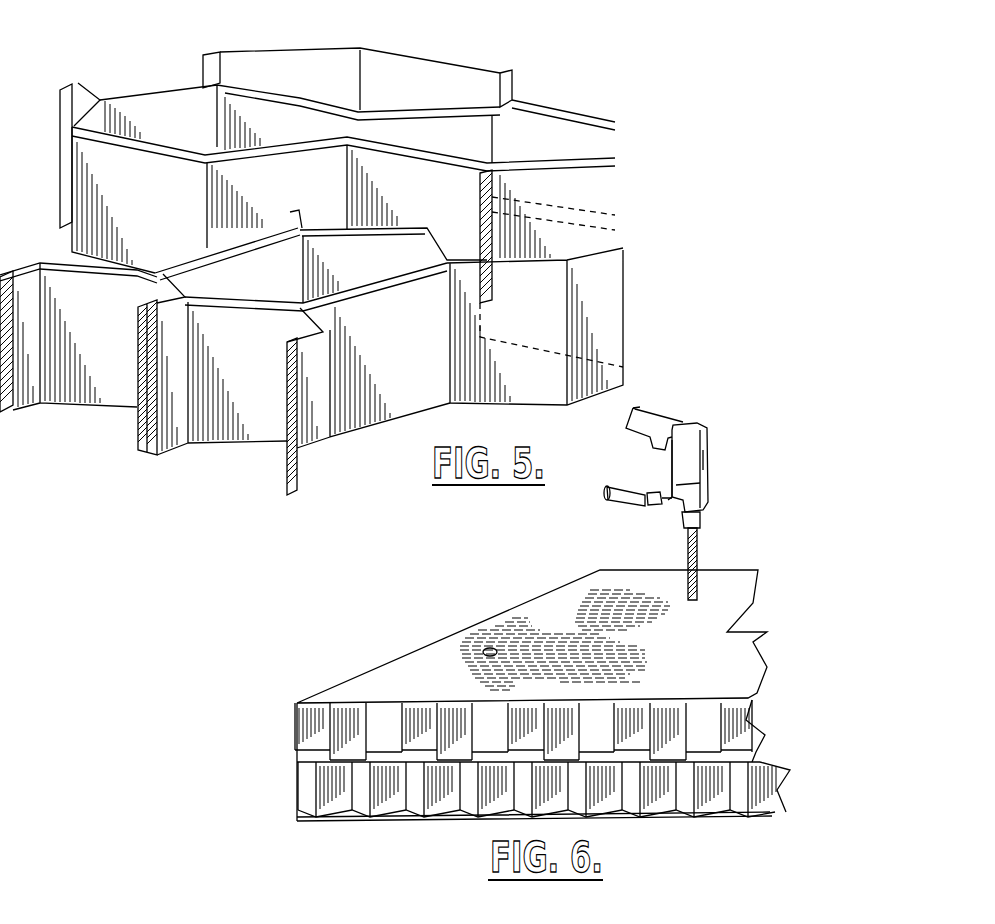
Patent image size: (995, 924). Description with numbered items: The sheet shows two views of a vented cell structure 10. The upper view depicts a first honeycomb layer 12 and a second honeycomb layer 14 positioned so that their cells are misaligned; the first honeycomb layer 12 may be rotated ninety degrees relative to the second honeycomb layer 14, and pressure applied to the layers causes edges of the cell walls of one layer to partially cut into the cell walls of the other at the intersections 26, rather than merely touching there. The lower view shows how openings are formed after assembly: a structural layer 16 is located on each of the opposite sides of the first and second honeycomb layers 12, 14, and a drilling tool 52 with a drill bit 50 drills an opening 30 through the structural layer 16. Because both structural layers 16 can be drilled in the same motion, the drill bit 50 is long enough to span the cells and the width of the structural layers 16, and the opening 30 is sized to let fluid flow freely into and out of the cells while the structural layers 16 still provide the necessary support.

In FIG. 6, the vented cell structure 10 is at (800, 573).
In FIG. 5, the first honeycomb layer 12 is at (20, 395).
In FIG. 6, the first honeycomb layer 12 is at (297, 772).
In FIG. 5, the second honeycomb layer 14 is at (512, 93).
In FIG. 6, the second honeycomb layer 14 is at (297, 716).
In FIG. 6, the structural layer 16 is at (305, 692).
In FIG. 5, the intersection 26 is at (497, 258).
In FIG. 6, the opening 30 is at (484, 649).
In FIG. 6, the drill bit 50 is at (700, 562).
In FIG. 6, the drilling tool 52 is at (702, 423).